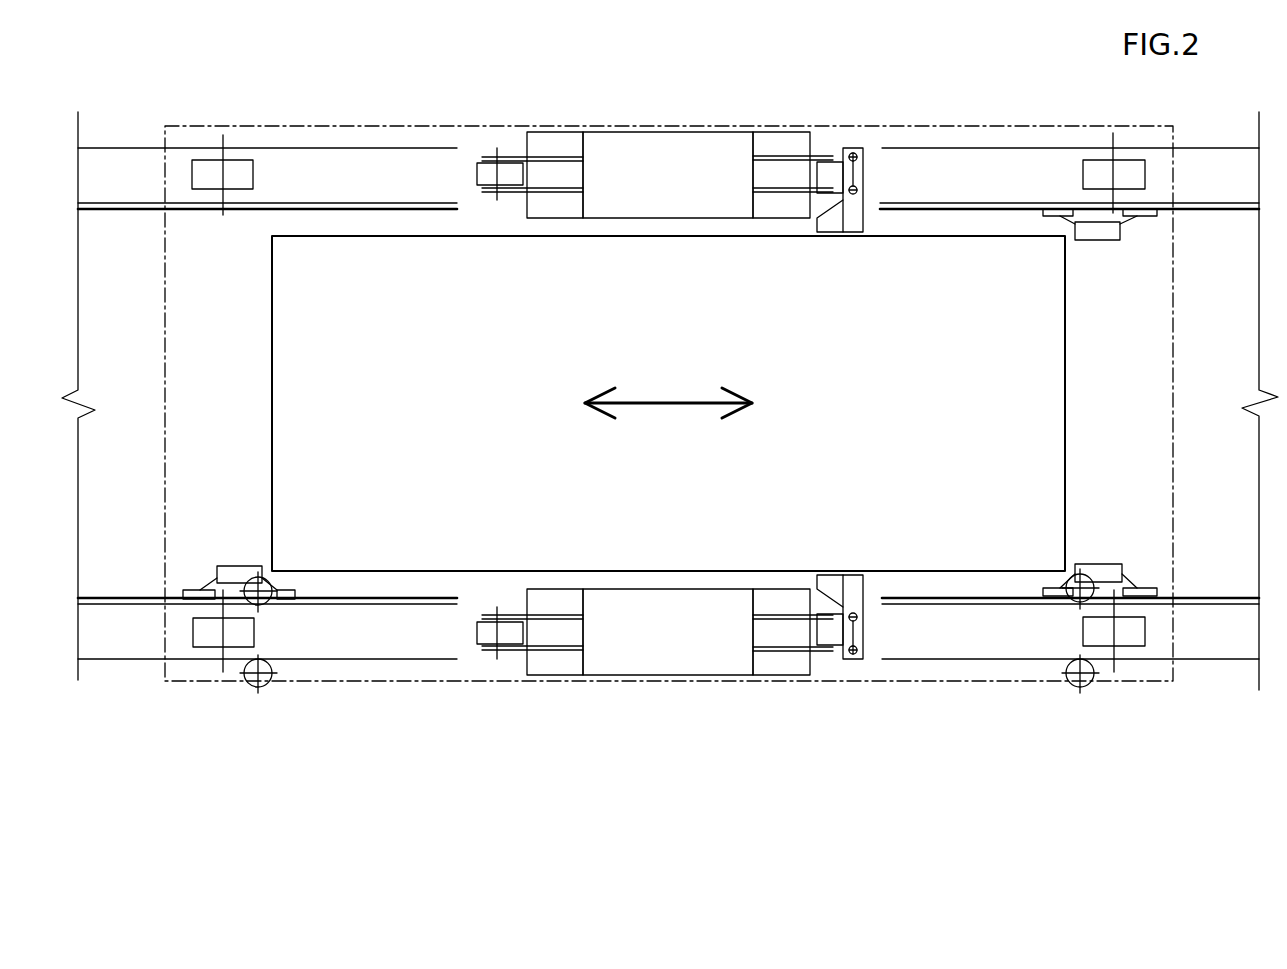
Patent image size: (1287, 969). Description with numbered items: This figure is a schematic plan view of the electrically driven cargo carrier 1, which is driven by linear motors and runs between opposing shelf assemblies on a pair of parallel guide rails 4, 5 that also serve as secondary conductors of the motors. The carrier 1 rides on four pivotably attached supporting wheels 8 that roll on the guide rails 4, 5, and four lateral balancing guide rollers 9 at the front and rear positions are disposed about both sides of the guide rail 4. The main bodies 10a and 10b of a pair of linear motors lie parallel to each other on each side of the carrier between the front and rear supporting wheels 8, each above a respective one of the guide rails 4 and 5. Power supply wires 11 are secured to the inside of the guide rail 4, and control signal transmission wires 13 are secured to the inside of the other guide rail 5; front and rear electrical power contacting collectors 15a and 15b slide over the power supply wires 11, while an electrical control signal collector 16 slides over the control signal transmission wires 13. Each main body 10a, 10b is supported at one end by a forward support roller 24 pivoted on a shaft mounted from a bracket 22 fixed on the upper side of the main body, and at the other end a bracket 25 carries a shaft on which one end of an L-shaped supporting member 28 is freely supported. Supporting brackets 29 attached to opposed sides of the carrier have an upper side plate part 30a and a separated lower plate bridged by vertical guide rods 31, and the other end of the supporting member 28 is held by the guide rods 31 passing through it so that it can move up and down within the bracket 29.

The electrically driven cargo carrier 1 is at (1150, 126).
The guide rail 4 is at (980, 627).
The guide rail 5 is at (962, 160).
The supporting wheels 8 is at (236, 172).
The lateral balancing guide rollers 9 is at (260, 673).
The main body of linear motor 10a is at (652, 645).
The main body of linear motor 10b is at (648, 193).
The power supply wires 11 is at (669, 544).
The control signal transmission wires 13 is at (1002, 210).
The electrical power contacting collector 15a is at (1102, 570).
The electrical power contacting collector 15b is at (235, 572).
The electrical control signal collector 16 is at (1095, 230).
The bracket 22 is at (557, 162).
The forward support roller 24 is at (487, 188).
The bracket 25 is at (772, 195).
The L-shaped supporting member 28 is at (832, 165).
The supporting bracket 29 is at (842, 240).
The upper side plate part 30a is at (827, 222).
The vertical guide rods 31 is at (853, 157).